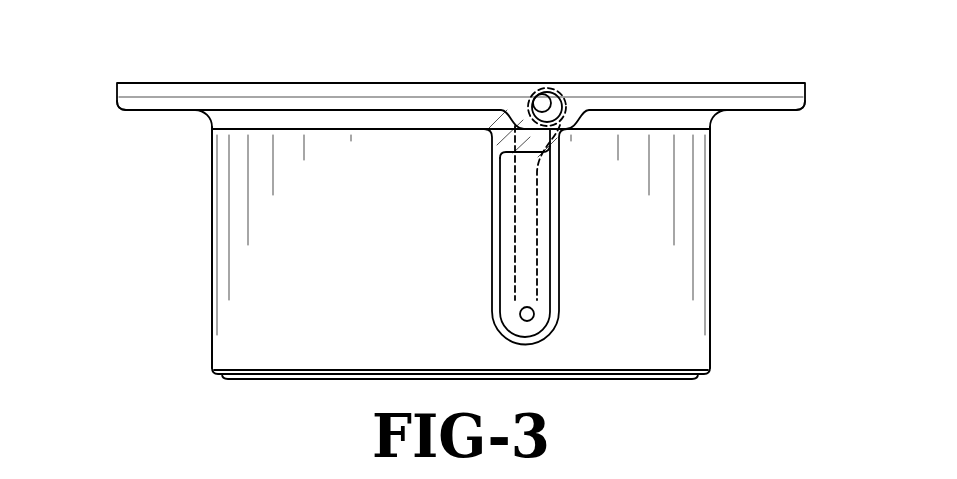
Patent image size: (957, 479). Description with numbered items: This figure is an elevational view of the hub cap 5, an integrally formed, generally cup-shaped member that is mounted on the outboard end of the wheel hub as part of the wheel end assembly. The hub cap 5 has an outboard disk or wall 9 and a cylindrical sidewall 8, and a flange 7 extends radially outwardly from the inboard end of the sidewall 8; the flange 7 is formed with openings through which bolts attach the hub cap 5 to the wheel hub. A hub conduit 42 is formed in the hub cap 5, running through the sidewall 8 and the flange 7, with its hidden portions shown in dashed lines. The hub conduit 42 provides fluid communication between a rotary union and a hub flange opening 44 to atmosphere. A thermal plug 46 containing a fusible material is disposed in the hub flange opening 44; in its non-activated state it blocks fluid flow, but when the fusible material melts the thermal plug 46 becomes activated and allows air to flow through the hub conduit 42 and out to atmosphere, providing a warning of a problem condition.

The hub cap 5 is at (140, 83).
The flange 7 is at (118, 104).
The cylindrical sidewall 8 is at (212, 270).
The outboard disk or wall 9 is at (635, 380).
The hub conduit 42 is at (512, 238).
The hub flange opening 44 is at (530, 106).
The thermal plug 46 is at (566, 100).